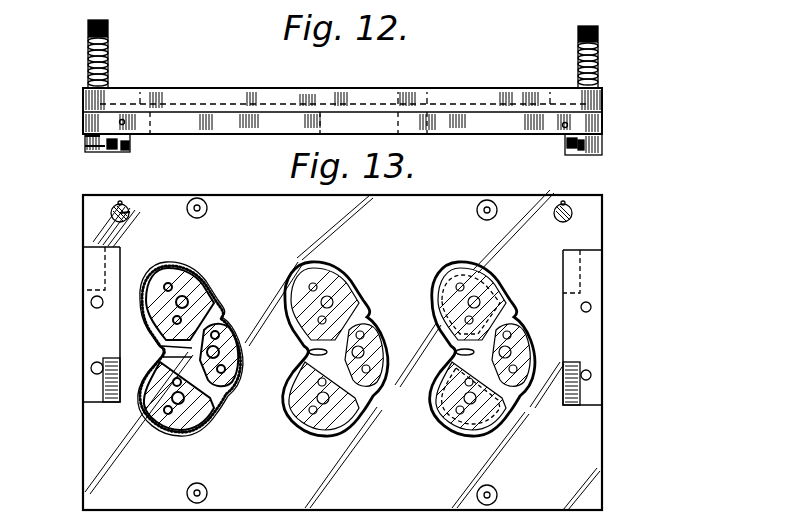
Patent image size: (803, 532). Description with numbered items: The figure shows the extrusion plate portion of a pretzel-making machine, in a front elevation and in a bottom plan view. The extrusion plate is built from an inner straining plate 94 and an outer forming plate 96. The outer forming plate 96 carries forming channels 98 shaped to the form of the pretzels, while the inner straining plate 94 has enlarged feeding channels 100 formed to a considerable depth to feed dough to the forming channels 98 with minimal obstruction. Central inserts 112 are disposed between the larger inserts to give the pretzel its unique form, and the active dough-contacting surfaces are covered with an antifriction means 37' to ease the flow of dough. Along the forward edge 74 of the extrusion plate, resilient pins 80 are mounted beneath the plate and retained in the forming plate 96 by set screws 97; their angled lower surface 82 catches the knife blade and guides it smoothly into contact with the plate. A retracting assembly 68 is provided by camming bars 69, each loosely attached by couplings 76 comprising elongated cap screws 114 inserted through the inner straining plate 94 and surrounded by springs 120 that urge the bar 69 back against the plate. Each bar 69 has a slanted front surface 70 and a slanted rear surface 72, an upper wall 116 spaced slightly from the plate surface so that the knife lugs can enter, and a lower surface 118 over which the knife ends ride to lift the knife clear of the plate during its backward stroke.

In FIG. 12, the inner straining plate 94 is at (603, 100).
In FIG. 12, the outer forming plate 96 is at (603, 127).
In FIG. 13, the outer forming plate 96 is at (456, 207).
In FIG. 12, the forward edge of extrusion plate 74 is at (350, 110).
In FIG. 12, the feeding channels 100 is at (152, 98).
In FIG. 12, the cap screws 114 is at (88, 25).
In FIG. 12, the springs 120 is at (88, 64).
In FIG. 12, the loose couplings 76 is at (112, 44).
In FIG. 12, the camming bar 69 is at (100, 152).
In FIG. 13, the camming bar 69 is at (90, 300).
In FIG. 12, the lower surface of pin 82 is at (119, 150).
In FIG. 13, the lower surface of pin 82 is at (121, 216).
In FIG. 12, the pins 80 is at (127, 148).
In FIG. 13, the pins 80 is at (131, 211).
In FIG. 12, the set screws 97 is at (124, 124).
In FIG. 13, the set screws 97 is at (125, 203).
In FIG. 12, the upper wall of camming bar 116 is at (85, 136).
In FIG. 12, the slanted front surface 70 is at (92, 148).
In FIG. 13, the slanted front surface 70 is at (105, 268).
In FIG. 12, the lower surface of camming bar 118 is at (105, 152).
In FIG. 13, the lower surface of camming bar 118 is at (93, 326).
In FIG. 13, the retracting assembly 68 is at (82, 350).
In FIG. 13, the slanted rear surface 72 is at (103, 392).
In FIG. 13, the forming channels 98 is at (214, 420).
In FIG. 13, the antifriction means 37' is at (328, 350).
In FIG. 13, the central inserts 112 is at (309, 352).